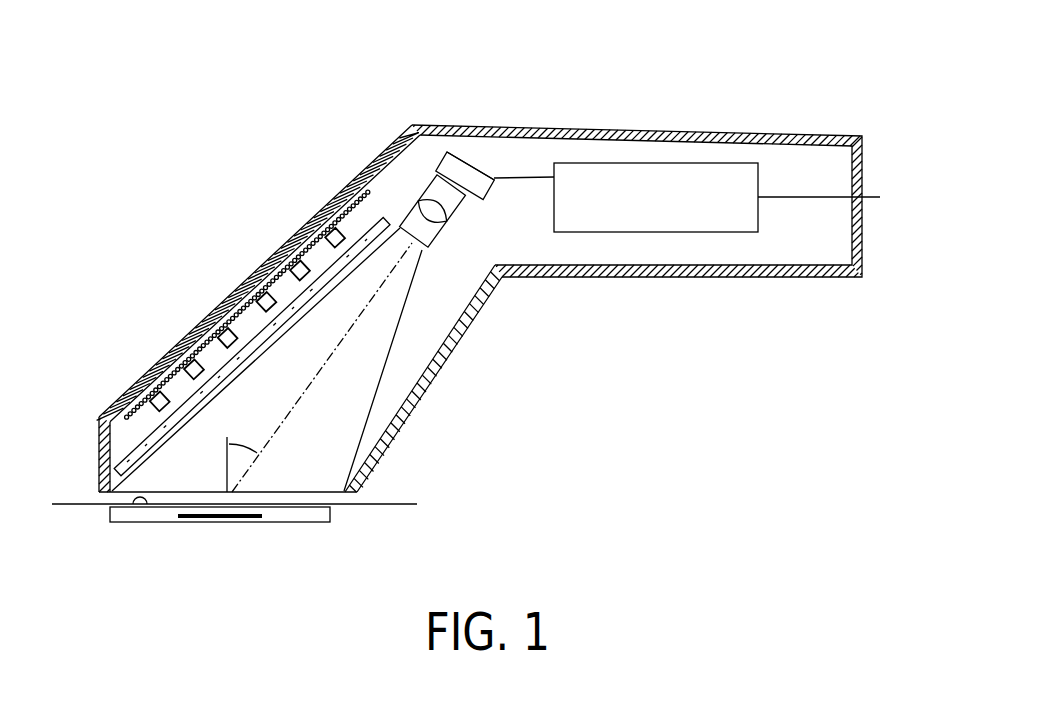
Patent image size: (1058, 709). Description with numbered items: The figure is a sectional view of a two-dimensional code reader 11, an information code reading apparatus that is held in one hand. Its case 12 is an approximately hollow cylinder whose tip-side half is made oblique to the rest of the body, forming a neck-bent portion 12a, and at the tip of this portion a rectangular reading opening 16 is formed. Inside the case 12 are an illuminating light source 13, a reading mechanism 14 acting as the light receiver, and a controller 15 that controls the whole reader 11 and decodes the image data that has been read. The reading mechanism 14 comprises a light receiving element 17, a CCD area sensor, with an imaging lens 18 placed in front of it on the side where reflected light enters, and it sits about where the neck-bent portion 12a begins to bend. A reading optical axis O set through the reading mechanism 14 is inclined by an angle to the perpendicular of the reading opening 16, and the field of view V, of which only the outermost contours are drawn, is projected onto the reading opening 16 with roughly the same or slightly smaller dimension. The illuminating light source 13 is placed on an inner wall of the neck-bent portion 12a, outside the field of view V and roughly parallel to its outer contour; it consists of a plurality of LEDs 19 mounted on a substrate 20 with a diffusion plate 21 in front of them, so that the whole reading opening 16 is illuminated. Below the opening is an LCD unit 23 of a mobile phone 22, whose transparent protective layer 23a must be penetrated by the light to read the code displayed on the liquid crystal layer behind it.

The two-dimensional code reader 11 is at (541, 126).
The case 12 is at (425, 124).
The neck-bent portion 12a is at (458, 338).
The illuminating light source 13 is at (367, 197).
The reading mechanism 14 is at (471, 154).
The controller 15 is at (680, 177).
The reading opening 16 is at (320, 494).
The light receiving element 17 is at (455, 150).
The imaging lens 18 is at (440, 207).
The LEDs 19 is at (303, 228).
The substrate 20 is at (263, 270).
The diffusion plate 21 is at (138, 447).
The mobile phone 22 is at (66, 504).
The liquid crystal display (LCD) unit 23 is at (331, 520).
The transparent protective layer 23a is at (133, 508).
The reading optical axis O is at (322, 363).
The field of view V is at (362, 423).